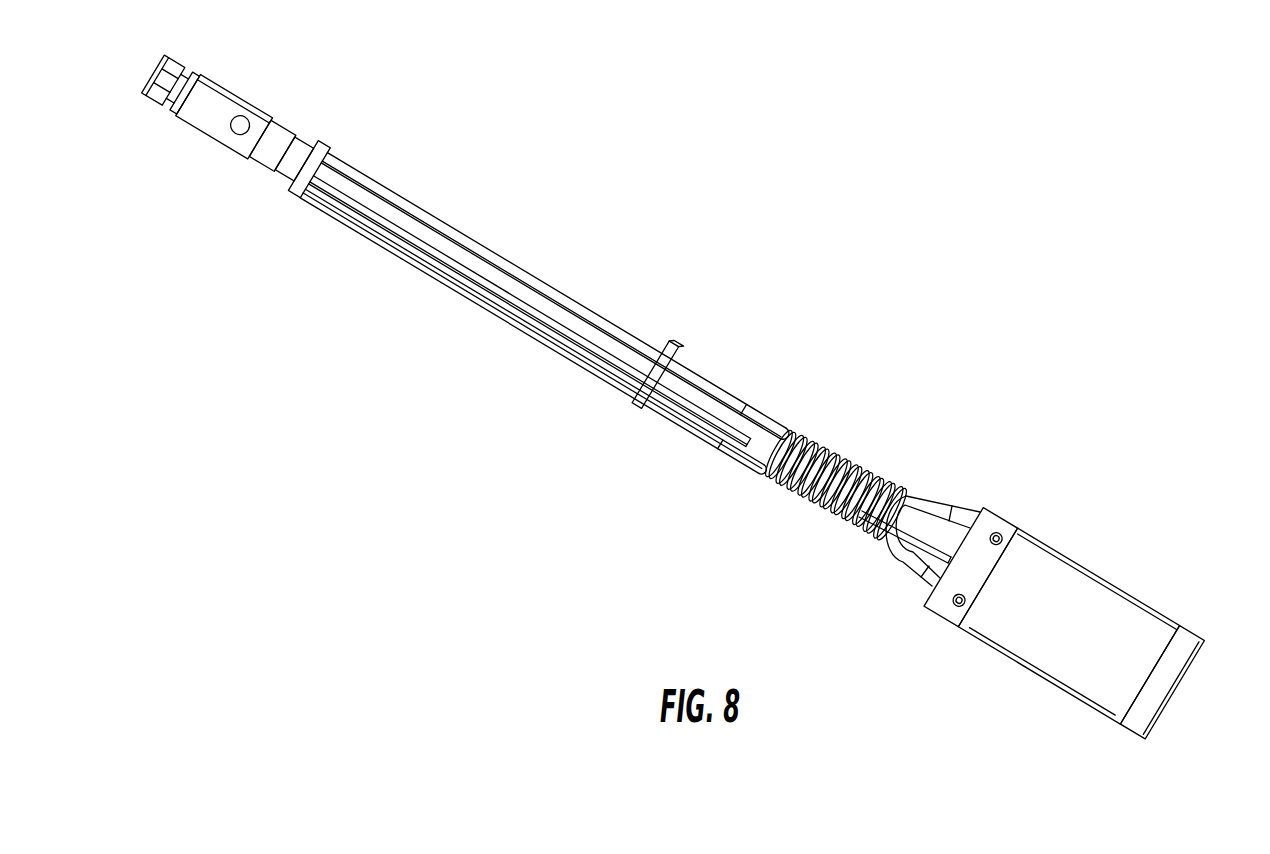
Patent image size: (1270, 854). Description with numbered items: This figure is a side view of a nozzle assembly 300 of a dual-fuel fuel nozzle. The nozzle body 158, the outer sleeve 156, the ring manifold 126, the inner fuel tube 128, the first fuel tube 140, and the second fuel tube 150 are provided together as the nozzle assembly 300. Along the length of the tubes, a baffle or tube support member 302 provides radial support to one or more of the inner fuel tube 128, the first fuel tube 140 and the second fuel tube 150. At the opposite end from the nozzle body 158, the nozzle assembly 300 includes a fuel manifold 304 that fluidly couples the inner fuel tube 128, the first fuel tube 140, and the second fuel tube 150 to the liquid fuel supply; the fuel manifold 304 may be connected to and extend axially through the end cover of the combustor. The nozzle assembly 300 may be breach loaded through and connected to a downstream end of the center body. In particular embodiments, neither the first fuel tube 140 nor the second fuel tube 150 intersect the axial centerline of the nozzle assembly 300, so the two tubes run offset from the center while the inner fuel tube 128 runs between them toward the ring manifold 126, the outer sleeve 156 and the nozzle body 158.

The nozzle assembly 300 is at (851, 238).
The fuel manifold 304 is at (248, 88).
The first fuel tube 140 is at (410, 197).
The second fuel tube 150 is at (445, 278).
The inner fuel tube 128 is at (566, 331).
The tube support member 302 is at (635, 402).
The ring manifold 126 is at (996, 506).
The outer sleeve 156 is at (1069, 548).
The nozzle body 158 is at (1193, 627).